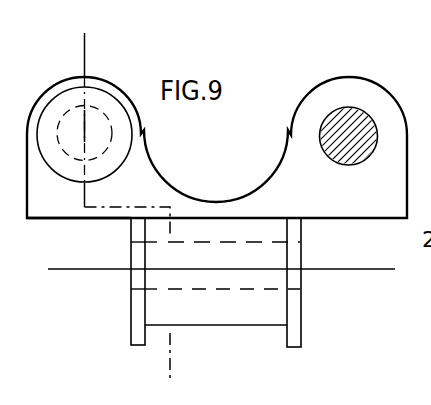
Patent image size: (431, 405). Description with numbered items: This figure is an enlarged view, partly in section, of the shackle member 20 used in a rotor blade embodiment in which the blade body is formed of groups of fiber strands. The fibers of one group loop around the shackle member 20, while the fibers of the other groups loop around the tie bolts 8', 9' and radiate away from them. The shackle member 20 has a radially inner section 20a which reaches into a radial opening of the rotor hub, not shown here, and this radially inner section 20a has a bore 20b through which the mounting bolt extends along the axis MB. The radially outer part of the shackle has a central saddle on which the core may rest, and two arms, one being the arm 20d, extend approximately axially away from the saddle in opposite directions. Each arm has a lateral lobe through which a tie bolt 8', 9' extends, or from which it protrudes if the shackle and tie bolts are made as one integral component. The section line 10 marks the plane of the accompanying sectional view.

The tie bolt 8' is at (73, 128).
The tie bolt 9' is at (348, 125).
The section line 10- 10 is at (84, 33).
The shackle member 20 is at (213, 222).
The radially inner section 20a is at (137, 315).
The bore 20b is at (275, 255).
The arm 20d is at (101, 220).
The axis of the mounting bolt MB is at (337, 270).